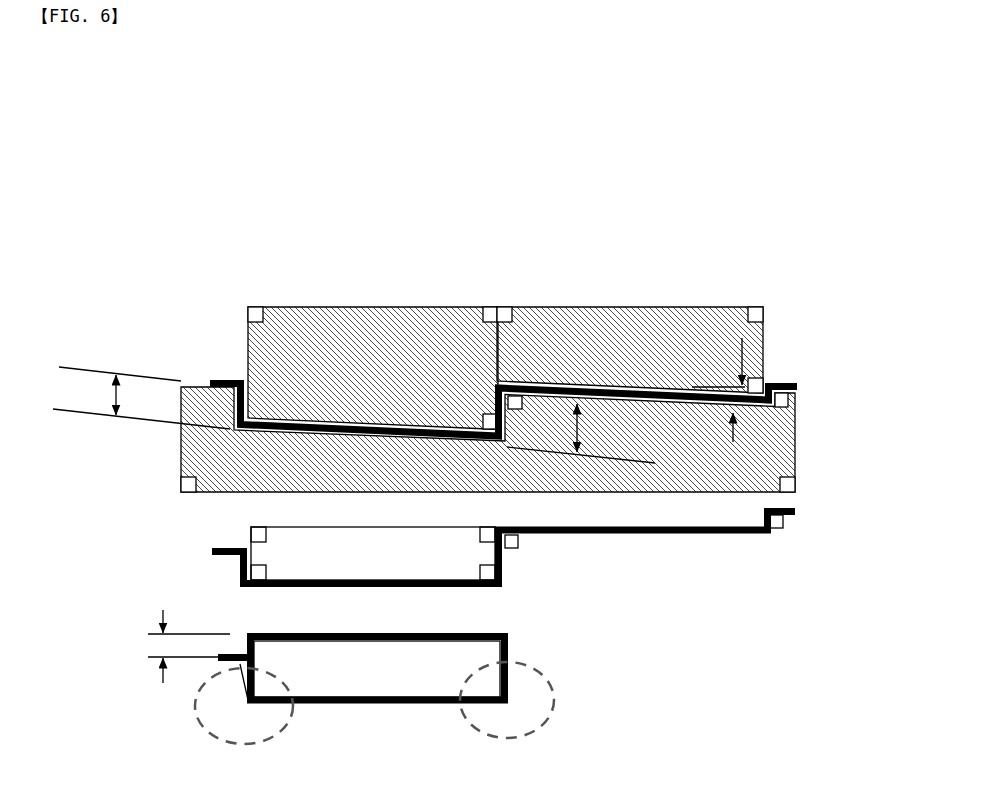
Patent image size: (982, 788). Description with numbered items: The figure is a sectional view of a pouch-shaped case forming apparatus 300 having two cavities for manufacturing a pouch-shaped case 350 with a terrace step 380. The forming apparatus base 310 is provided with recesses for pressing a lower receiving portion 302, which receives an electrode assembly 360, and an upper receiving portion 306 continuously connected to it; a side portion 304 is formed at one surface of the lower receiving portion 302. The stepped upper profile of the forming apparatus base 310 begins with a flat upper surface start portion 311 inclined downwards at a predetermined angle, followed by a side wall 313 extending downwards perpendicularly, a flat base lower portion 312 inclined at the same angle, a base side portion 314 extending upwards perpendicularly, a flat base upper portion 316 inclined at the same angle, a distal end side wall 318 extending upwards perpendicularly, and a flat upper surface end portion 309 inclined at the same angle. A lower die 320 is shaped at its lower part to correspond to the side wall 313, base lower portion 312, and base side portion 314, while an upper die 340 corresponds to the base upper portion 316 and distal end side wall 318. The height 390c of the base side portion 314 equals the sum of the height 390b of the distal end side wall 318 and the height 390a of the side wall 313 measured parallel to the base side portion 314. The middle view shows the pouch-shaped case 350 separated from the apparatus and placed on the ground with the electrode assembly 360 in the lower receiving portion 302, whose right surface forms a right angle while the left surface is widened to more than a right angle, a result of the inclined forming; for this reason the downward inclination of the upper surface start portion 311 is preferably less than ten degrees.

The pouch-shaped case forming apparatus 300 is at (152, 263).
The lower receiving portion 302 is at (257, 428).
The side portion 304 is at (496, 395).
The upper receiving portion 306 is at (583, 386).
The upper surface end portion 309 is at (795, 384).
The forming apparatus base 310 is at (180, 462).
The upper surface start portion 311 is at (194, 385).
The base lower portion 312 is at (332, 436).
The side wall 313 is at (232, 405).
The base side portion 314 is at (510, 423).
The base upper portion 316 is at (675, 408).
The distal end side wall 318 is at (778, 411).
The lower die 320 is at (380, 322).
The upper die 340 is at (628, 328).
The pouch-shaped case 350 is at (775, 382).
The electrode assembly 360 is at (353, 563).
The terrace step 380 is at (187, 660).
The height of the side wall 390a is at (141, 398).
The height of the distal end side wall 390b is at (711, 390).
The height of the base side portion 390c is at (581, 433).